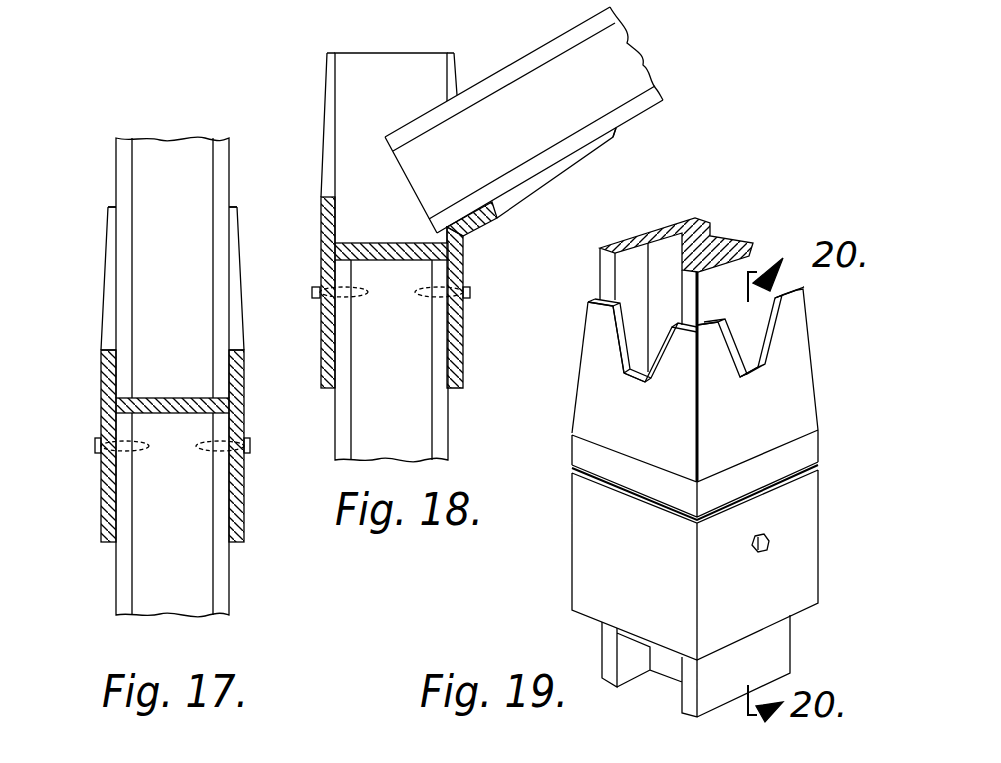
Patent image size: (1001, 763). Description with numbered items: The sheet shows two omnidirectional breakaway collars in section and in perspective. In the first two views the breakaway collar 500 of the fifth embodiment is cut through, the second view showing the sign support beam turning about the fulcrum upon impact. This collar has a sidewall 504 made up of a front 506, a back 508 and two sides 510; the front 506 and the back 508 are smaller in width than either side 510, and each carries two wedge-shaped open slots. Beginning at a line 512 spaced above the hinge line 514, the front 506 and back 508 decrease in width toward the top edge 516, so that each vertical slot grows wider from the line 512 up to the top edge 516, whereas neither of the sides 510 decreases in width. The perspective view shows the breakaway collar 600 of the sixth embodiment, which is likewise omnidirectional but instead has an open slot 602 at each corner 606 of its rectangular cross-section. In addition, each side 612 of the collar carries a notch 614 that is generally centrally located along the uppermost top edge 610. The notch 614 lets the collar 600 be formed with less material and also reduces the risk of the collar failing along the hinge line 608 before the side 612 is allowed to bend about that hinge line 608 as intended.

In FIG. 17, the breakaway collar 500 is at (240, 520).
In FIG. 18, the breakaway collar 500 is at (326, 380).
In FIG. 17, the sidewall 504 is at (233, 359).
In FIG. 18, the sidewall 504 is at (327, 124).
In FIG. 17, the front 506 is at (242, 271).
In FIG. 18, the front 506 is at (568, 172).
In FIG. 17, the back 508 is at (105, 265).
In FIG. 18, the back 508 is at (325, 100).
In FIG. 17, the side 510 is at (172, 267).
In FIG. 18, the side 510 is at (393, 65).
In FIG. 17, the line 512 is at (102, 350).
In FIG. 18, the line 512 is at (321, 197).
In FIG. 17, the hinge line 514 is at (103, 390).
In FIG. 18, the hinge line 514 is at (324, 243).
In FIG. 17, the top edge 516 is at (108, 206).
In FIG. 18, the top edge 516 is at (617, 135).
In FIG. 19, the breakaway collar 600 is at (807, 573).
In FIG. 19, the open slot 602 is at (598, 338).
In FIG. 19, the corner 606 is at (598, 298).
In FIG. 19, the hinge line 608 is at (603, 483).
In FIG. 19, the top edge 610 is at (622, 335).
In FIG. 19, the side 612 is at (595, 405).
In FIG. 19, the notch 614 is at (656, 360).